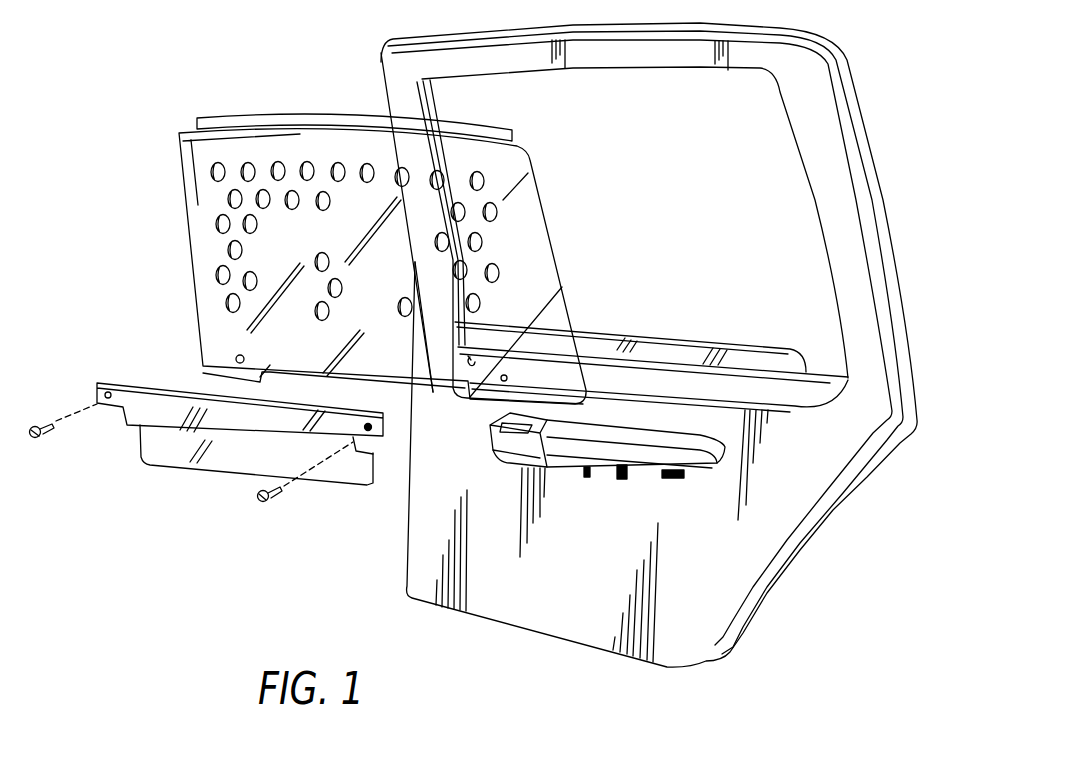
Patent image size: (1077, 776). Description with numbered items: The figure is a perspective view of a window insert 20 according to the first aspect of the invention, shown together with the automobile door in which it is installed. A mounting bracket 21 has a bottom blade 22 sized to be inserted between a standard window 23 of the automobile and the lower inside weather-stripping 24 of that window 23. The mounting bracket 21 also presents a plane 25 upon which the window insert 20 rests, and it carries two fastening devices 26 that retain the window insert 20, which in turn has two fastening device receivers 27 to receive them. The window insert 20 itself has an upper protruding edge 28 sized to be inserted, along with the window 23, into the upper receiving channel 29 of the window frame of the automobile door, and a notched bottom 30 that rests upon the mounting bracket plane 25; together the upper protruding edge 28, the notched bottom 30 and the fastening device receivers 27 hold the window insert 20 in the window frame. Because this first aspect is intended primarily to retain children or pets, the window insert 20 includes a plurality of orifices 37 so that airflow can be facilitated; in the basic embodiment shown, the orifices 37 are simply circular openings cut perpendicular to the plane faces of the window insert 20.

The window insert 20 is at (208, 195).
The mounting bracket 21 is at (150, 400).
The bottom blade 22 is at (163, 455).
The window 23 is at (748, 357).
The lower inside weather-stripping 24 is at (655, 360).
The plane 25 is at (373, 447).
The fastening devices 26 is at (273, 500).
The fastening device receivers 27 is at (236, 356).
The upper protruding edge 28 is at (215, 126).
The upper receiving channel 29 is at (638, 72).
The notched bottom 30 is at (433, 394).
The orifices 37 is at (277, 163).